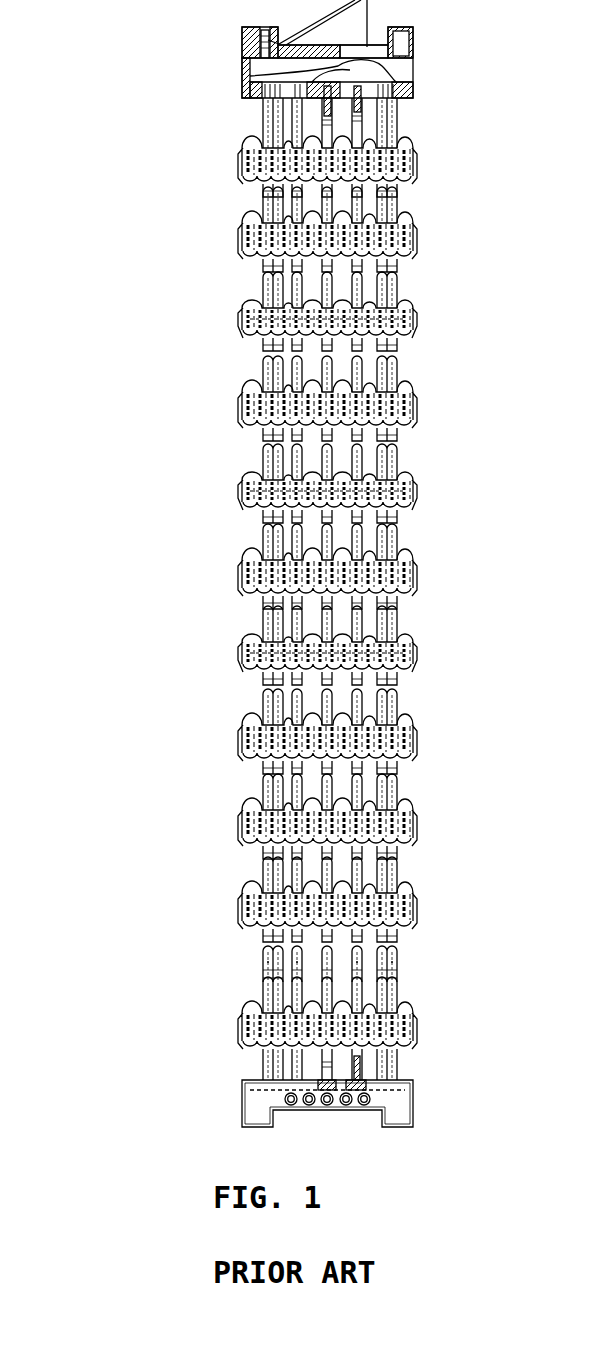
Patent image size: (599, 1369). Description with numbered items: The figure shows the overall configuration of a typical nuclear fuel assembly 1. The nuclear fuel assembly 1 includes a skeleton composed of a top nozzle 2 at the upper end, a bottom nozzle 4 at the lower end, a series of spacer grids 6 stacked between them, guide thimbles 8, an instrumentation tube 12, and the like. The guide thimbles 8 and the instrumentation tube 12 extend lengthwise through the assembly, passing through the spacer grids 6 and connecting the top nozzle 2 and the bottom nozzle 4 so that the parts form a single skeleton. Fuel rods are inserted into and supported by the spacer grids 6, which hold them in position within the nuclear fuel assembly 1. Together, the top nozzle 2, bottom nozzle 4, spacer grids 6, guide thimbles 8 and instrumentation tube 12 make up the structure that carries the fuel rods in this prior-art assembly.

The nuclear fuel assembly 1 is at (172, 345).
The top nozzle 2 is at (413, 46).
The bottom nozzle 4 is at (415, 1100).
The spacer grids 6 is at (415, 572).
The guide thimbles 8 is at (262, 112).
The instrumentation tube 12 is at (330, 124).